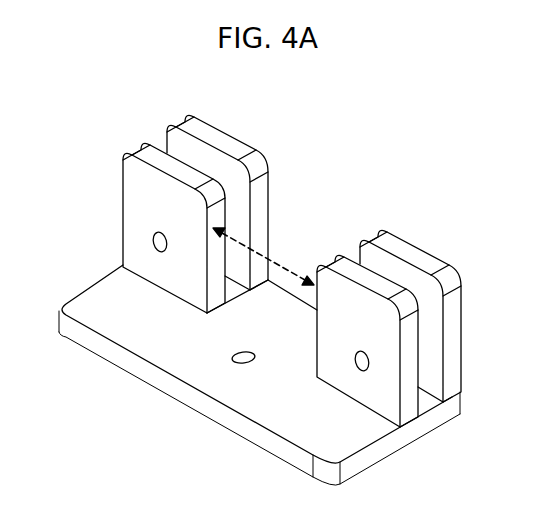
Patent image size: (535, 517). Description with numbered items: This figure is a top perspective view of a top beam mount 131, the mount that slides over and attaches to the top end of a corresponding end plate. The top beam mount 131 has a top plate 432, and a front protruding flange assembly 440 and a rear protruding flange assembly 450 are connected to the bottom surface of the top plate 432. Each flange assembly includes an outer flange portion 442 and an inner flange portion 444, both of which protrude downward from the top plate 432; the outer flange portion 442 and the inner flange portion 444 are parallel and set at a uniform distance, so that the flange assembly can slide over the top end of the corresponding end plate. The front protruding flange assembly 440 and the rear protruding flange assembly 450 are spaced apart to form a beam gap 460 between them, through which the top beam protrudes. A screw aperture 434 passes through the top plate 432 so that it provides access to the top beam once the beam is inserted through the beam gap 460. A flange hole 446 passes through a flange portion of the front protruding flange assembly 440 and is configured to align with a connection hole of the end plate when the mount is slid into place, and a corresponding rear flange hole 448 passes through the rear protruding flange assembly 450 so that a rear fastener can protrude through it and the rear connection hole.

The top beam mount 131 is at (97, 113).
The top plate 432 is at (131, 384).
The screw aperture 434 is at (247, 363).
The front protruding flange assembly 440 is at (273, 138).
The outer flange portion 442 is at (184, 286).
The inner flange portion 444 is at (227, 132).
The flange hole 446 is at (152, 240).
The rear inner flange hole 448 is at (352, 357).
The rear protruding flange assembly 450 is at (429, 229).
The beam gap 460 is at (284, 266).